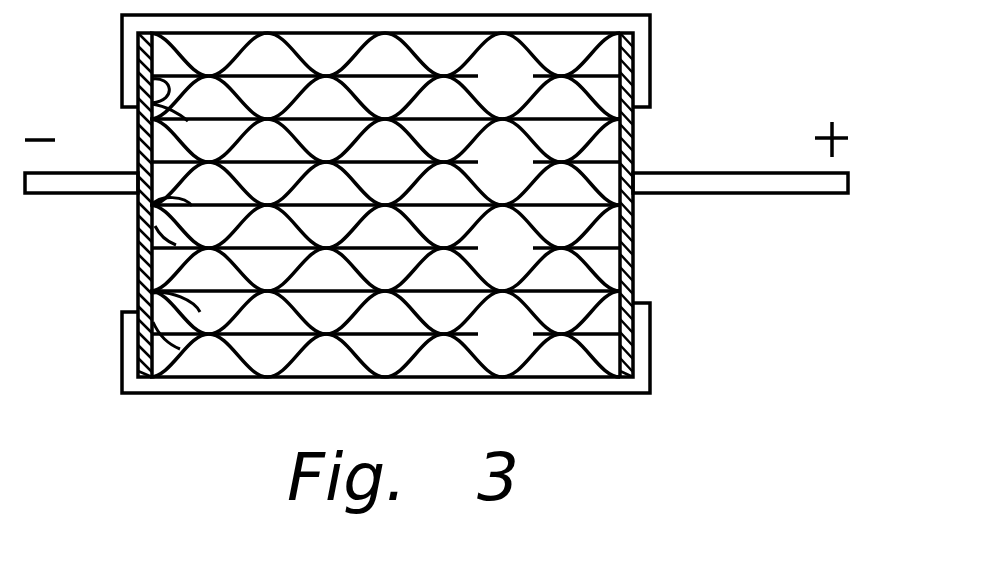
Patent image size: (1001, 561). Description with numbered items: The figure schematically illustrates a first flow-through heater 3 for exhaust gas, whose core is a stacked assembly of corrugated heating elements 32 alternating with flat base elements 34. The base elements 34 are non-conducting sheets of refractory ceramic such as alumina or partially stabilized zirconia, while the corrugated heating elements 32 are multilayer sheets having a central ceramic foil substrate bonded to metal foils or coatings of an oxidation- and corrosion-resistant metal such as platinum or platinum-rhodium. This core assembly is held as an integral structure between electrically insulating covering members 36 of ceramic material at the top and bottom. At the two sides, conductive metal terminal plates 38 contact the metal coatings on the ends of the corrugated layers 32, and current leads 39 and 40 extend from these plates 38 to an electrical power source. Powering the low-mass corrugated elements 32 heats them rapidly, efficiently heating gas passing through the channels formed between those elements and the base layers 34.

The electrochemical cell assembly 3 is at (712, 82).
The corrugated heating elements 32 is at (490, 63).
The base elements 34 is at (138, 92).
The electrically insulating covering members 36 is at (647, 32).
The conductive metal terminal plates 38 is at (138, 277).
The current lead 39 is at (762, 185).
The current lead 40 is at (60, 185).